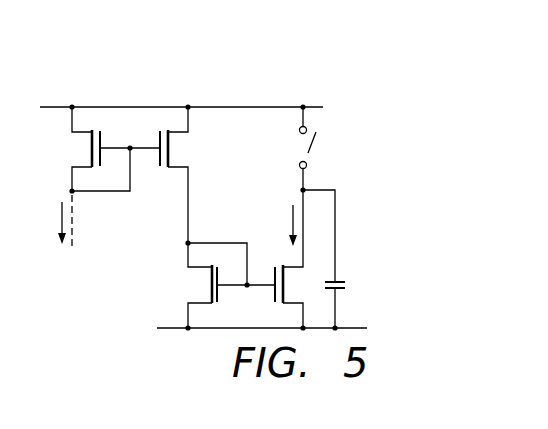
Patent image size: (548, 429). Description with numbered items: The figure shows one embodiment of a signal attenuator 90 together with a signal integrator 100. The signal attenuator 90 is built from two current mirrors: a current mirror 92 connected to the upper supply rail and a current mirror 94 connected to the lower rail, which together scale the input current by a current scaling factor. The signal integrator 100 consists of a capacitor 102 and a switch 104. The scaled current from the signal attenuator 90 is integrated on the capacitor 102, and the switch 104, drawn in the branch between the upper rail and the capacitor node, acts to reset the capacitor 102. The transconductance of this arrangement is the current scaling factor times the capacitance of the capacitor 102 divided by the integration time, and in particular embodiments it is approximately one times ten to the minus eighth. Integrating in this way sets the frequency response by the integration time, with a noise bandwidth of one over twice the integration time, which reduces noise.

The signal attenuator 90 is at (110, 280).
The current mirror 92 is at (129, 86).
The current mirror 94 is at (200, 342).
The signal integrator 100 is at (365, 292).
The capacitor 102 is at (345, 285).
The switch 104 is at (311, 147).